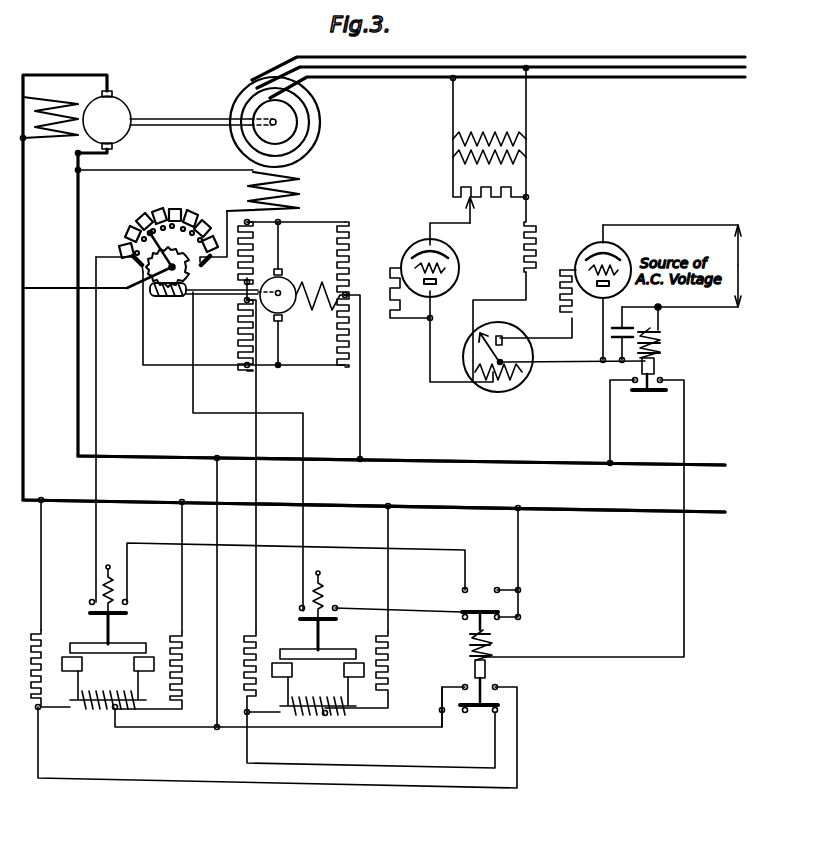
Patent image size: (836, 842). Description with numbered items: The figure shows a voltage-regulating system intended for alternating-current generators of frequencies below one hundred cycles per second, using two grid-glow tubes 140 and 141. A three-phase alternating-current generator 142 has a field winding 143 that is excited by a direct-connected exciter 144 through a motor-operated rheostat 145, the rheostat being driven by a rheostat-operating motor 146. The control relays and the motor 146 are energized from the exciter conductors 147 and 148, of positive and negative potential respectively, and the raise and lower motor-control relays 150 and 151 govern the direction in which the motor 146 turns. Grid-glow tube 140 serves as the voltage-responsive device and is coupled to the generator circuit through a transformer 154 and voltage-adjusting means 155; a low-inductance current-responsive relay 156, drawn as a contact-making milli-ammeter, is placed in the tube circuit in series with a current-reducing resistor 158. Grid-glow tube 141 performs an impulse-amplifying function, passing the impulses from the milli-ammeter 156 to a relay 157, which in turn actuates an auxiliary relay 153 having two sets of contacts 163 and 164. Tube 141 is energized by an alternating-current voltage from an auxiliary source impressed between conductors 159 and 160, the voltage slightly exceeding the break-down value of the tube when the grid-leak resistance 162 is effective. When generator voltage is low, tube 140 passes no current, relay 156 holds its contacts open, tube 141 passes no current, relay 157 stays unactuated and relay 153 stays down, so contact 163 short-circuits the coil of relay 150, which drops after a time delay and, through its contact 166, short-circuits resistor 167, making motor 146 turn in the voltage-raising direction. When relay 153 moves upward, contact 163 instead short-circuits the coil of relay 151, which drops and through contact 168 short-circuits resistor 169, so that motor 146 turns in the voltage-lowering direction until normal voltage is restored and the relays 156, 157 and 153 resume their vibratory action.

The grid-glow tube 140 is at (412, 243).
The grid-glow tube 141 is at (587, 247).
The alternating-current generator 142 is at (364, 137).
The field winding 143 is at (297, 192).
The exciter 144 is at (98, 63).
The motor-operated rheostat 145 is at (186, 201).
The rheostat-operating motor 146 is at (323, 342).
The exciter conductor 147 is at (430, 454).
The exciter conductor 148 is at (445, 506).
The raise motor-control relay 150 is at (324, 760).
The lower motor-control relay 151 is at (109, 755).
The auxiliary relay 153 is at (547, 654).
The transformer 154 is at (572, 160).
The voltage-adjusting means 155 is at (514, 223).
The current-responsive relay 156 is at (518, 415).
The relay 157 is at (707, 358).
The current-reducing resistor 158 is at (527, 224).
The conductor 159 is at (672, 245).
The conductor 160 is at (699, 286).
The grid-leak resistance 162 is at (561, 300).
The contact 163 is at (478, 715).
The contact 164 is at (464, 611).
The contact 166 is at (329, 619).
The resistor 167 is at (243, 270).
The contact 168 is at (127, 613).
The resistor 169 is at (240, 326).